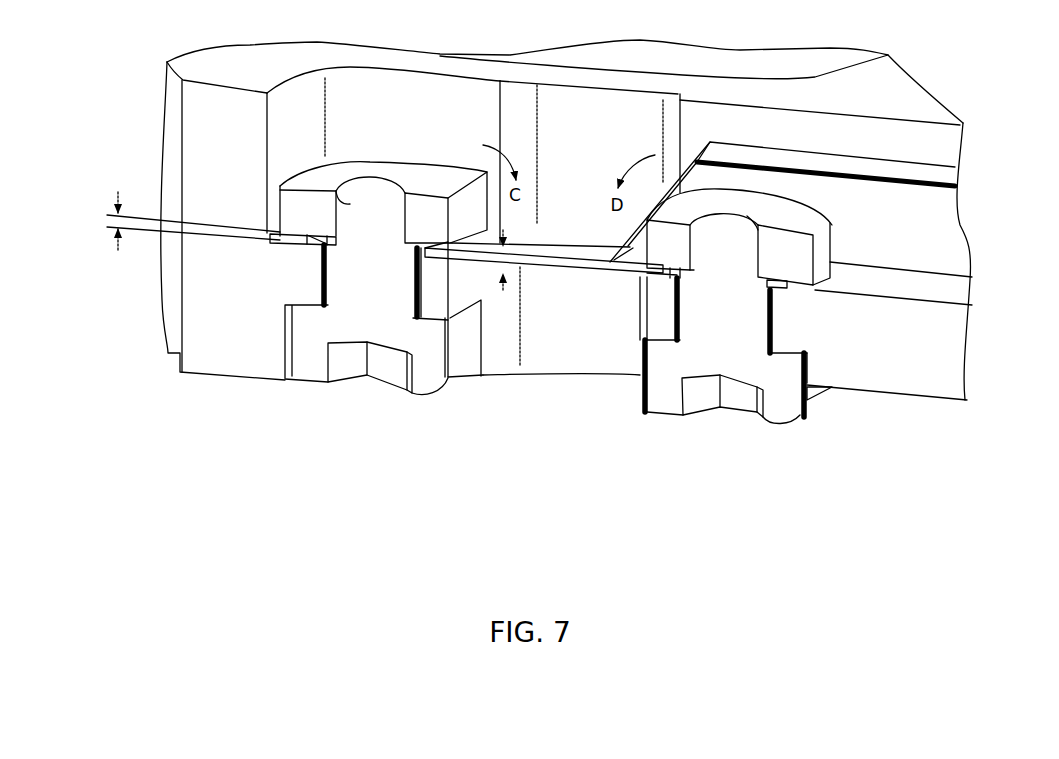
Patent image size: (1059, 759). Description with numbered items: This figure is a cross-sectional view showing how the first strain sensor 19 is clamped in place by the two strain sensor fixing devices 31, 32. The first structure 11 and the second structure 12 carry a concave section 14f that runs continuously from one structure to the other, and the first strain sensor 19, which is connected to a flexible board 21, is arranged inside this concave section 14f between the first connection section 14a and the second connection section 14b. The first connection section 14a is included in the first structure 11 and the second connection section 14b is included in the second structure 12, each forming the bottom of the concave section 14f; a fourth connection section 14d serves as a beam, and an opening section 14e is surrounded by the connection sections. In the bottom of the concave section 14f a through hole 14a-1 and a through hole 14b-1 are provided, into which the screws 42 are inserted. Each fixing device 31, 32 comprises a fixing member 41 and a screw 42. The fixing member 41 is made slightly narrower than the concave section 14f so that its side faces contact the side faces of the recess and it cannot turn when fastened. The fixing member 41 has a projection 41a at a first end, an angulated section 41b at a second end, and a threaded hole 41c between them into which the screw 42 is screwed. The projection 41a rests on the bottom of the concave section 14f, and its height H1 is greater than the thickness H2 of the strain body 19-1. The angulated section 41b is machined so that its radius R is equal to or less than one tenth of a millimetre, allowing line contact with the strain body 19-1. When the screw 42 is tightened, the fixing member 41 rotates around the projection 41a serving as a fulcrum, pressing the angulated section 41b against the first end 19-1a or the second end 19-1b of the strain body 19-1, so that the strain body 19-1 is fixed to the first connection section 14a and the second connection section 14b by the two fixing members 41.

The first structure 11 is at (208, 60).
The second structure 12 is at (914, 388).
The first connection section 14a is at (297, 287).
The through hole 14a-1 is at (413, 293).
The second connection section 14b is at (800, 337).
The through hole 14b-1 is at (681, 318).
The fourth connection section 14d is at (601, 75).
The opening section 14e is at (559, 87).
The concave section 14f is at (362, 85).
The first strain sensor 19 is at (557, 268).
The strain body 19-1 is at (478, 250).
The first end of the strain body 19-1a is at (447, 251).
The second end of the strain body 19-1b is at (639, 290).
The flexible board 21 is at (760, 155).
The fixing device 31 is at (312, 164).
The fixing device 32 is at (800, 214).
The fixing member 41 is at (400, 172).
The projection 41a is at (306, 240).
The angulated section 41b is at (450, 241).
The threaded hole 41c is at (350, 195).
The screw 42 is at (314, 368).
The radius R is at (445, 241).
The height of the projection H1 is at (112, 222).
The thickness of the strain body H2 is at (524, 263).